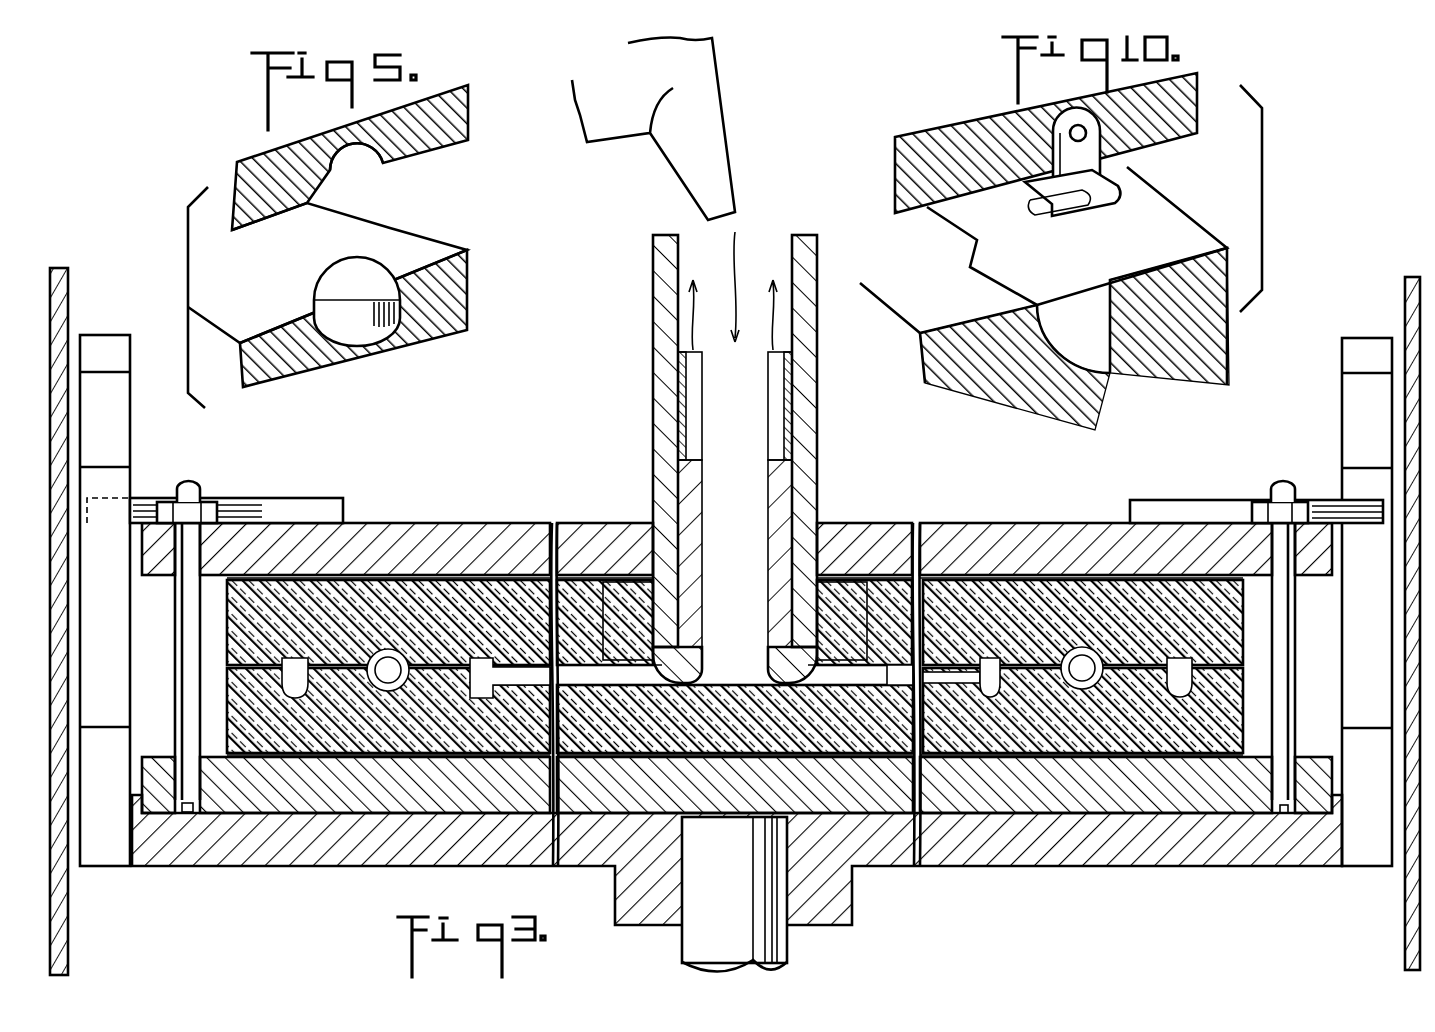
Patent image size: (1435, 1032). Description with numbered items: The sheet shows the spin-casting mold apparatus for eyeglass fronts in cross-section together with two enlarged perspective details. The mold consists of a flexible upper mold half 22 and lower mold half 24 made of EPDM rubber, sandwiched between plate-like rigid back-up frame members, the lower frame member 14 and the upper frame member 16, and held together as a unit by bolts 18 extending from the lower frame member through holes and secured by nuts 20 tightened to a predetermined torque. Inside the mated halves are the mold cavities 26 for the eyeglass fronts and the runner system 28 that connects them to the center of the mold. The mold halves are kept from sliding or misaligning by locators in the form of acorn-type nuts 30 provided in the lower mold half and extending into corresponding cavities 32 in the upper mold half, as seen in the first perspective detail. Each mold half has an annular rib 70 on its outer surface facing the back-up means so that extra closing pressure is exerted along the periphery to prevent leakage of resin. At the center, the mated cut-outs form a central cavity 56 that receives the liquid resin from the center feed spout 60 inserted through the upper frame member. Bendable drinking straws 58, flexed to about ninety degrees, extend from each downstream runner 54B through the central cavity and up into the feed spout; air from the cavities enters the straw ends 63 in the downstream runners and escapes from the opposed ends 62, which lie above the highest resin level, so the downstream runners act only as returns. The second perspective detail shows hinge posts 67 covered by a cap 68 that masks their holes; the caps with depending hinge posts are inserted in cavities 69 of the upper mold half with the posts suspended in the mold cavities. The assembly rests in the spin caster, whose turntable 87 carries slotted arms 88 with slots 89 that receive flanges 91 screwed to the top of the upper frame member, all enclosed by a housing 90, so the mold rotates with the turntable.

In FIG. 3, the lower frame member 14 is at (322, 803).
In FIG. 3, the upper frame member 16 is at (452, 533).
In FIG. 3, the bolts 18 is at (183, 674).
In FIG. 3, the nuts 20 is at (202, 503).
In FIG. 3, the upper mold half 22 is at (380, 600).
In FIG. 5, the upper mold half 22 is at (442, 138).
In FIG. 10, the upper mold half 22 is at (1192, 120).
In FIG. 3, the lower mold half 24 is at (378, 740).
In FIG. 5, the lower mold half 24 is at (468, 283).
In FIG. 10, the lower mold half 24 is at (1230, 262).
In FIG. 3, the mold cavities 26 is at (292, 657).
In FIG. 3, the runner system 28 is at (528, 657).
In FIG. 3, the locator nuts 30 is at (400, 653).
In FIG. 5, the locator nuts 30 is at (349, 268).
In FIG. 3, the locator cavities 32 is at (373, 657).
In FIG. 5, the locator cavities 32 is at (377, 167).
In FIG. 3, the downstream runner 54B is at (568, 682).
In FIG. 3, the central cavity 56 is at (748, 661).
In FIG. 3, the drinking straws 58 is at (770, 558).
In FIG. 3, the center feed spout 60 is at (805, 430).
In FIG. 3, the straw ends 62 is at (767, 387).
In FIG. 3, the straw ends 63 is at (623, 658).
In FIG. 10, the hinge posts 67 is at (1105, 190).
In FIG. 10, the cap 68 is at (1050, 130).
In FIG. 10, the cavities 69 is at (1102, 136).
In FIG. 3, the annular rib 70 is at (264, 580).
In FIG. 3, the turntable 87 is at (1038, 857).
In FIG. 3, the slotted arms 88 is at (121, 320).
In FIG. 3, the slots 89 is at (118, 433).
In FIG. 3, the housing 90 is at (66, 296).
In FIG. 3, the flanges 91 is at (322, 507).